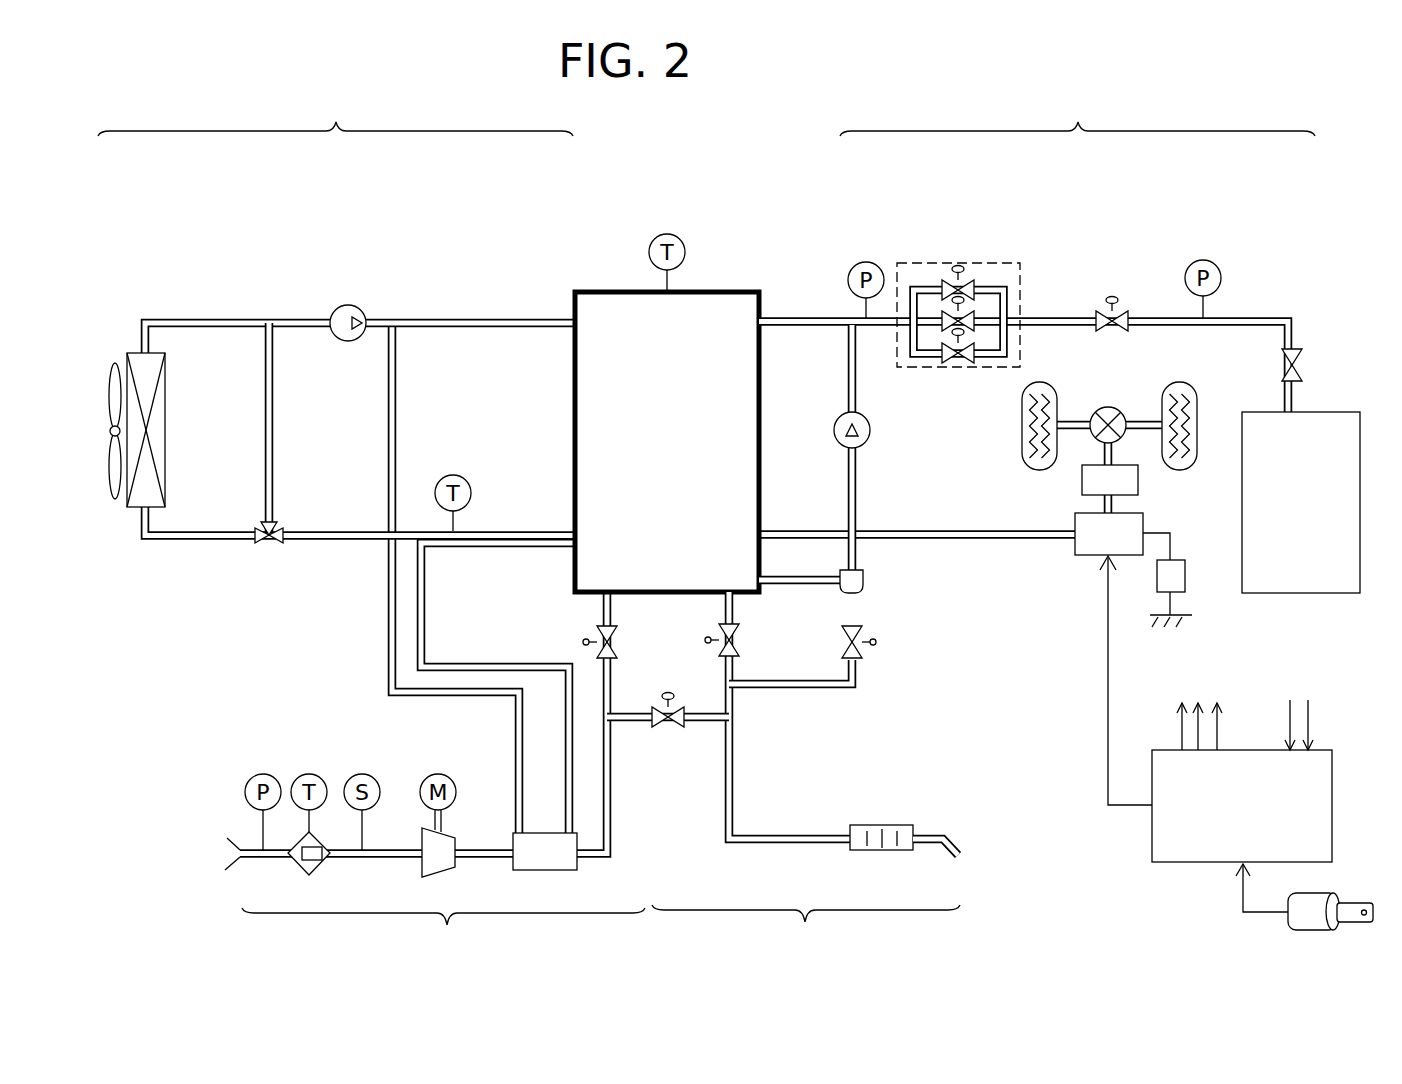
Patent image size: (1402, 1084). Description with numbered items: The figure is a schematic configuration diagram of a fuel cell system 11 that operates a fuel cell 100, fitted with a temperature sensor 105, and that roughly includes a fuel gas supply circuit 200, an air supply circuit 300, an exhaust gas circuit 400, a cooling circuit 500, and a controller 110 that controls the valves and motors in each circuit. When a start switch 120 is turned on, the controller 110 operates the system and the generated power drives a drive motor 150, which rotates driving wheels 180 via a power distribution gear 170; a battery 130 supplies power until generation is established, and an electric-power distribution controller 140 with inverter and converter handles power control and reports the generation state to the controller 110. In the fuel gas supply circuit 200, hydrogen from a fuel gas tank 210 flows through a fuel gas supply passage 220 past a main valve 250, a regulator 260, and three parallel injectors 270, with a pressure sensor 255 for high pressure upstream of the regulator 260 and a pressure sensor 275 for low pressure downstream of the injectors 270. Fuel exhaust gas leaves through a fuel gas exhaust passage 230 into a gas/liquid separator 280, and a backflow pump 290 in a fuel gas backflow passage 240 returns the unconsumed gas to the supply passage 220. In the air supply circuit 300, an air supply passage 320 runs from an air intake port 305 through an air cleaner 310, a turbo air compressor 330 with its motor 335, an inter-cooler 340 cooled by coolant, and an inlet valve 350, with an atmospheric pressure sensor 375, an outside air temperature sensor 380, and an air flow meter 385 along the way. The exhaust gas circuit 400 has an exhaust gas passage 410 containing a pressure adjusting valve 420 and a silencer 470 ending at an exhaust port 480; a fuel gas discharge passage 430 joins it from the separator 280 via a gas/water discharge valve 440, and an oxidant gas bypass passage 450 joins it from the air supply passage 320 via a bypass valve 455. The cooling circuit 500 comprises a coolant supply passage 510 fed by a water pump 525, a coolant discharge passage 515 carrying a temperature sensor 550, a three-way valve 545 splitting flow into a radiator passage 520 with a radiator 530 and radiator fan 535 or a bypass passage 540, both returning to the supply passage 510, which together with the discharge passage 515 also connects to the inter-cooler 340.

The fuel cell system 11 is at (767, 150).
The fuel cell 100 is at (760, 290).
The temperature sensor 105 is at (675, 236).
The controller 110 is at (1332, 805).
The start switch 120 is at (1322, 895).
The battery 130 is at (1186, 575).
The electric-power distribution controller 140 is at (1075, 540).
The drive motor 150 is at (1140, 480).
The power distribution gear 170 is at (1100, 407).
The driving wheels 180 is at (1178, 383).
The fuel gas supply circuit 200 is at (1077, 112).
The fuel gas tank 210 is at (1310, 412).
The fuel gas supply passage 220 is at (1067, 318).
The fuel gas exhaust passage 230 is at (770, 585).
The fuel gas backflow passage 240 is at (858, 490).
The main valve 250 is at (1300, 355).
The pressure sensor for high pressure 255 is at (1215, 265).
The regulator 260 is at (1118, 312).
The injector 270 is at (1005, 262).
The pressure sensor for low pressure 275 is at (877, 265).
The gas/liquid separator 280 is at (865, 578).
The backflow pump 290 is at (872, 433).
The air supply circuit 300 is at (443, 936).
The air intake port 305 is at (232, 848).
The air cleaner 310 is at (296, 868).
The air supply passage 320 is at (400, 860).
The air compressor 330 is at (422, 835).
The compressor motor 335 is at (450, 775).
The inter-cooler 340 is at (540, 870).
The inlet valve 350 is at (615, 630).
The atmospheric pressure sensor 375 is at (255, 775).
The outside air temperature sensor 380 is at (300, 775).
The air flow meter 385 is at (360, 774).
The exhaust gas circuit 400 is at (806, 931).
The exhaust gas passage 410 is at (790, 835).
The pressure adjusting valve 420 is at (745, 640).
The fuel gas discharge passage 430 is at (860, 680).
The gas/water discharge valve 440 is at (880, 642).
The oxidant gas bypass passage 450 is at (690, 715).
The bypass valve 455 is at (666, 693).
The silencer 470 is at (875, 825).
The exhaust port 480 is at (950, 838).
The cooling circuit 500 is at (335, 112).
The coolant supply passage 510 is at (538, 318).
The coolant discharge passage 515 is at (330, 530).
The radiator passage 520 is at (180, 530).
The water pump 525 is at (352, 305).
The radiator 530 is at (165, 395).
The radiator fan 535 is at (118, 365).
The bypass passage 540 is at (265, 350).
The three-way valve 545 is at (272, 547).
The temperature sensor 550 is at (453, 475).